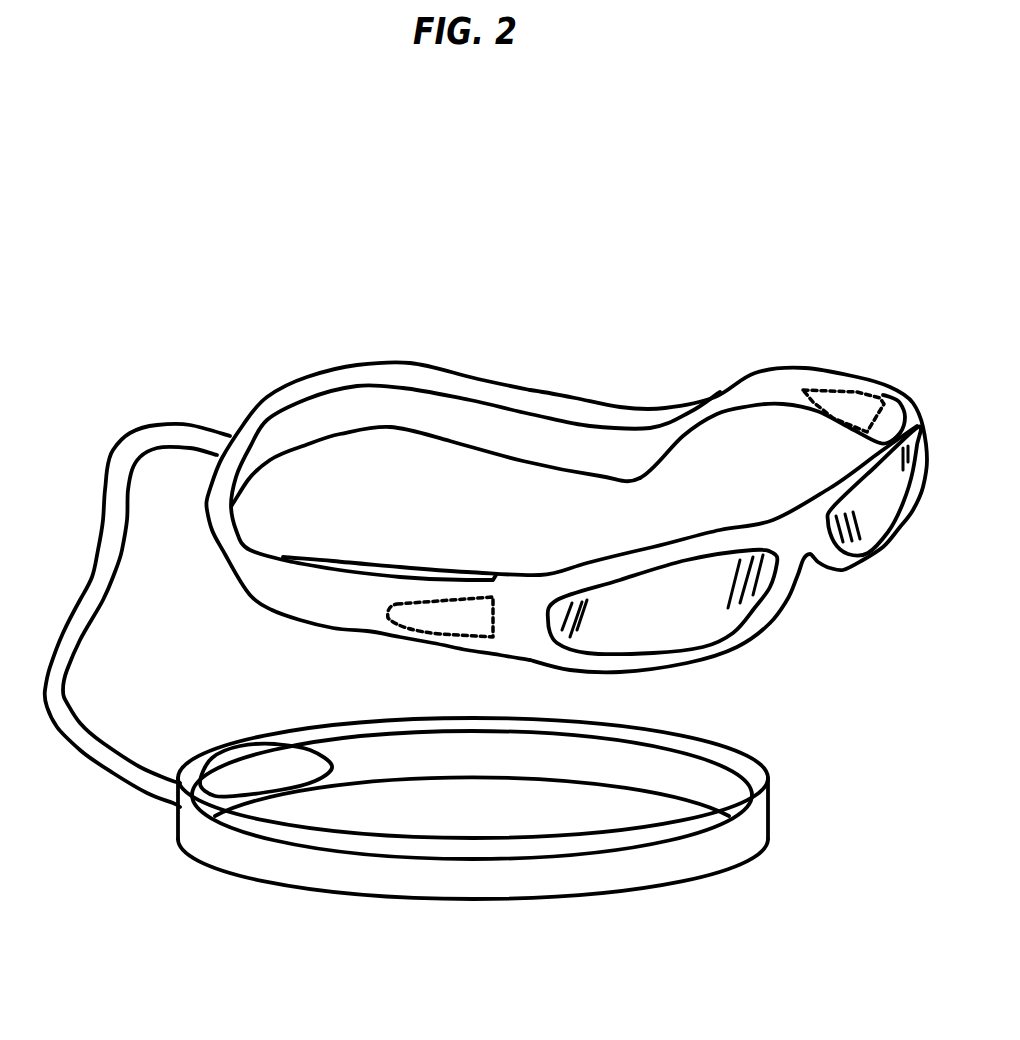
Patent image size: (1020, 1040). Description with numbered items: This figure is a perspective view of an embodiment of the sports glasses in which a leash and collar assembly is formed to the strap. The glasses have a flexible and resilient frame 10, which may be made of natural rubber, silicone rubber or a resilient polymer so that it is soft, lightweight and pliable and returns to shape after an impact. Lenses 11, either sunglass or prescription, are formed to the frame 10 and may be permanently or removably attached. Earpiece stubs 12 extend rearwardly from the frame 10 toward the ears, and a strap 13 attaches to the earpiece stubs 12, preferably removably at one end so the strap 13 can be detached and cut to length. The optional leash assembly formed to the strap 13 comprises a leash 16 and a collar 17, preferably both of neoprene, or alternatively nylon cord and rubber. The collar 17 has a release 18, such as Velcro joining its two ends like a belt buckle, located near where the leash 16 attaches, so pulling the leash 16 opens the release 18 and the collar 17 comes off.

The frame 10 is at (797, 531).
The lenses 11 is at (683, 595).
The earpiece stubs 12 is at (840, 395).
The strap 13 is at (405, 368).
The leash 16 is at (93, 585).
The collar 17 is at (772, 812).
The release 18 is at (320, 770).